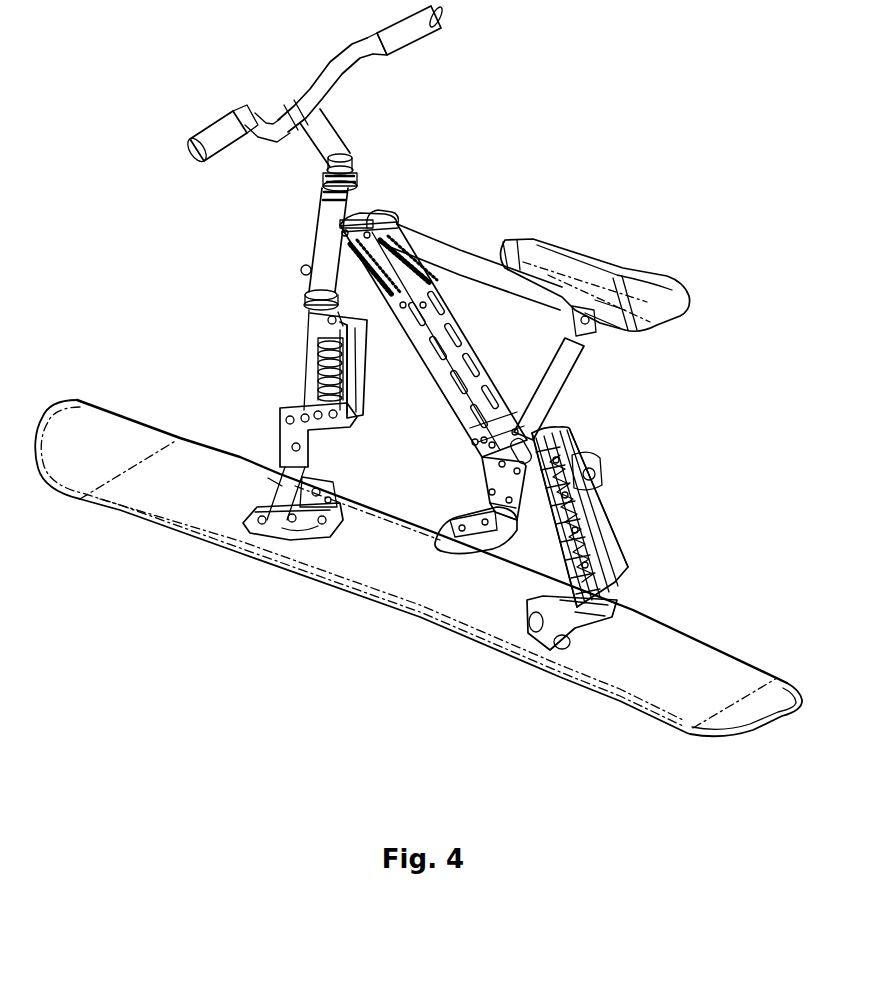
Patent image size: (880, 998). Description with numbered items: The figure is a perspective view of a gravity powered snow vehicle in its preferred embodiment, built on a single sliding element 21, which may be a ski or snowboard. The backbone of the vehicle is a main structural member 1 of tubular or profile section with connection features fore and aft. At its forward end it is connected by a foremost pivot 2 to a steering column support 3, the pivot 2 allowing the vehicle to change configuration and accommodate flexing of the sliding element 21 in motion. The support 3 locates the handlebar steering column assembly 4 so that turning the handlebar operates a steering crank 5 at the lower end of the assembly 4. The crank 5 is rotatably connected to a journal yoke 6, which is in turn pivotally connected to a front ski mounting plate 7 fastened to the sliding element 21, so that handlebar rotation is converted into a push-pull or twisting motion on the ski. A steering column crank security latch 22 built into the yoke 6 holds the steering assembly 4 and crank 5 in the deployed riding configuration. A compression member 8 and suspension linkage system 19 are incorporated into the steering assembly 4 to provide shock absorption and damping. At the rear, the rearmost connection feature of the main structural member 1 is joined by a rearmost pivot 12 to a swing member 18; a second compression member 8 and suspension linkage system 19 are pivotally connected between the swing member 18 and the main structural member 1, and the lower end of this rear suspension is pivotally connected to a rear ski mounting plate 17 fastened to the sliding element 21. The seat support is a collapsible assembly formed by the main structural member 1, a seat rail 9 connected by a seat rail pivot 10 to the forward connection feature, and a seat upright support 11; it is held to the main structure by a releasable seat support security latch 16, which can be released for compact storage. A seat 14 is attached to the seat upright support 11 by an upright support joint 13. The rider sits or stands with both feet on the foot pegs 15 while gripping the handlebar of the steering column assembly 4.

The main structural member 1 is at (455, 323).
The foremost pivot 2 is at (368, 213).
The steering column support 3 is at (318, 265).
The handlebar steering column assembly 4 is at (308, 128).
The steering crank 5 is at (282, 452).
The journal yoke 6 is at (305, 473).
The front ski mounting plate 7 is at (275, 533).
The compression member 8 is at (315, 376).
The seat rail 9 is at (462, 260).
The seat rail pivot 10 is at (396, 212).
The seat upright support 11 is at (560, 373).
The rearmost pivot 12 is at (507, 502).
The upright support joint 13 is at (582, 342).
The seat 14 is at (583, 270).
The foot peg 15 is at (447, 550).
The seat support security latch 16 is at (488, 473).
The rear ski mounting plate 17 is at (540, 640).
The swing member 18 is at (530, 548).
The suspension linkage system 19 is at (366, 413).
The sliding element 21 is at (93, 450).
The steering column crank security latch 22 is at (277, 480).